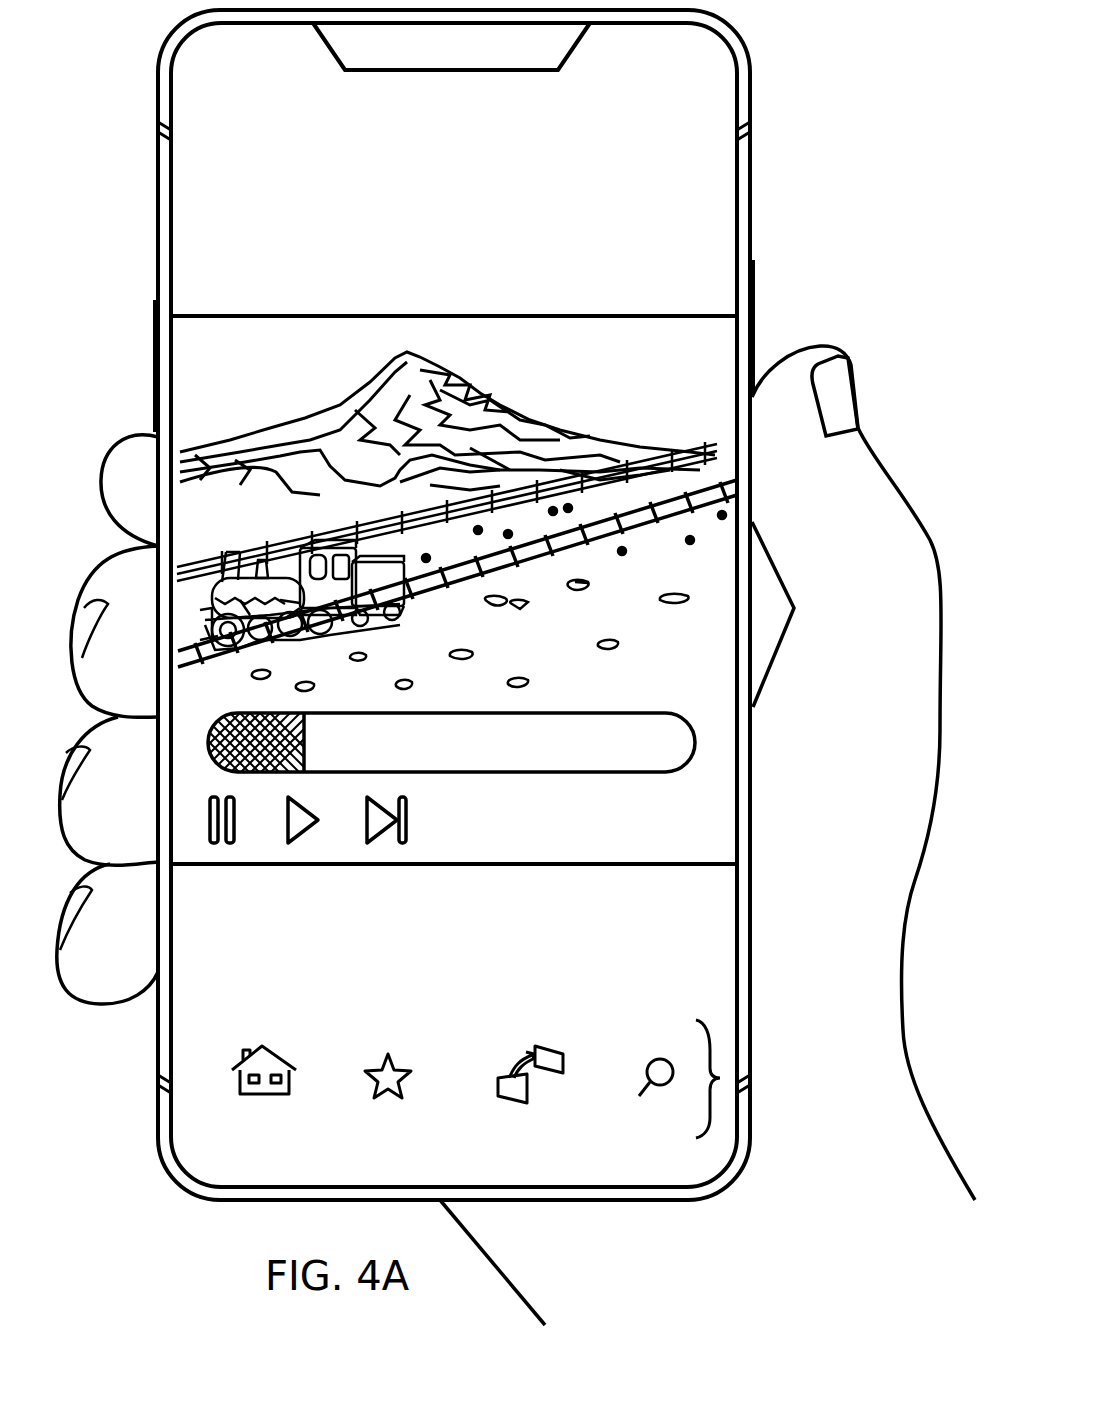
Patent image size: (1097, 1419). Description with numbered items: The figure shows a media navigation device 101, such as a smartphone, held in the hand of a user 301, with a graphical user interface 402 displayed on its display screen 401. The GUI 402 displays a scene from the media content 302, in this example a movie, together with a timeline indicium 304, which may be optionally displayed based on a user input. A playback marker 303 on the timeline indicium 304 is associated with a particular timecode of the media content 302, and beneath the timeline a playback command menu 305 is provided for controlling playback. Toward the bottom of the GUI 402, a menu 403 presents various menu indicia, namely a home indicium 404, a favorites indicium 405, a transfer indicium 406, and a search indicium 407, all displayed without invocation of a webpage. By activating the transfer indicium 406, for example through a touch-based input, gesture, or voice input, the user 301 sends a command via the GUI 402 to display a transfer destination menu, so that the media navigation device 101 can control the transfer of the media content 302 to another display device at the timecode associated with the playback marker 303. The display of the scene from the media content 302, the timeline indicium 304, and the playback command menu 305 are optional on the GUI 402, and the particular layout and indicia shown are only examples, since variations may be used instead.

The media navigation device 101 is at (768, 98).
The user 301 is at (888, 480).
The media content 302 is at (606, 408).
The playback marker 303 is at (306, 738).
The timeline indicium 304 is at (512, 774).
The playback command menu 305 is at (432, 830).
The display screen 401 is at (714, 194).
The graphical user interface 402 is at (371, 290).
The menu 403 is at (513, 1057).
The home indicium 404 is at (282, 1062).
The favorites indicium 405 is at (390, 1058).
The transfer indicium 406 is at (550, 1046).
The search indicium 407 is at (665, 1060).